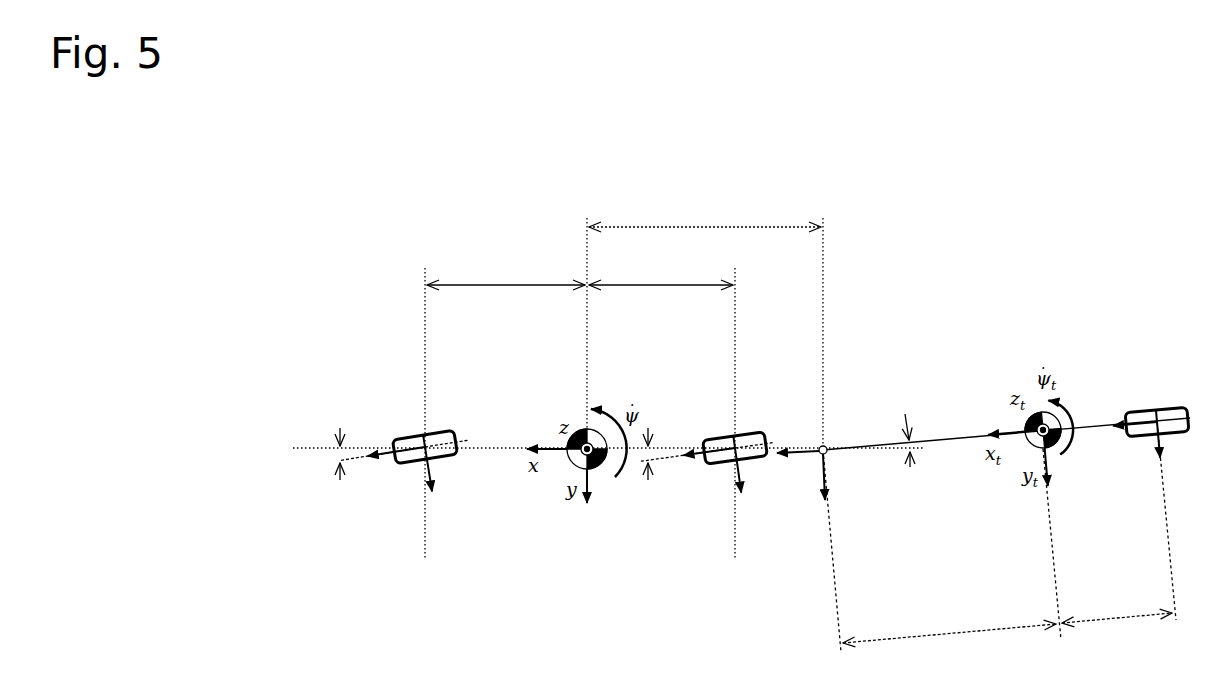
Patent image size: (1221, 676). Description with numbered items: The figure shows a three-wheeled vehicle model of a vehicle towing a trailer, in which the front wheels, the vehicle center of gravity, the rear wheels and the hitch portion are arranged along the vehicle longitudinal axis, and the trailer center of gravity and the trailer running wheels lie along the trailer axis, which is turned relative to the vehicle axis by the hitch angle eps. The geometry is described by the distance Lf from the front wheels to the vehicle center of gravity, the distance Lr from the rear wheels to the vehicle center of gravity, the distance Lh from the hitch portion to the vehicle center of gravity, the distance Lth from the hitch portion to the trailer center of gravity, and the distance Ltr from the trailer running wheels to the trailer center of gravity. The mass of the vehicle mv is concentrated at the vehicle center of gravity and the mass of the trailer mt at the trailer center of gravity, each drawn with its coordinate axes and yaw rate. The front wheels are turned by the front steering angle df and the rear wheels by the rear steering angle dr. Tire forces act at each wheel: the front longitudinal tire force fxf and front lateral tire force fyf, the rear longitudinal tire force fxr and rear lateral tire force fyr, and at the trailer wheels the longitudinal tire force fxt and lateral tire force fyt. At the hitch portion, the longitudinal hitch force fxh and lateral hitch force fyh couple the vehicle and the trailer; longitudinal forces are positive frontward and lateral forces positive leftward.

The front wheel to center of gravity distance Lf is at (506, 263).
The rear wheel to center of gravity distance Lr is at (661, 266).
The hitch portion to vehicle center of gravity distance Lh is at (705, 208).
The hitch portion to trailer center of gravity distance Lth is at (949, 618).
The trailer running wheel to trailer center of gravity distance Ltr is at (1117, 602).
The longitudinal tire force of the front wheels fxf is at (405, 459).
The lateral tire force of the front wheels fyf is at (440, 469).
The longitudinal tire force of the rear wheels fxr is at (707, 460).
The lateral tire force of the rear wheels fyr is at (750, 470).
The longitudinal hitch force fxh is at (802, 466).
The lateral hitch force fyh is at (840, 479).
The longitudinal tire force of the trailer running wheels fxt is at (1147, 436).
The lateral tire force of the trailer running wheels fyt is at (1170, 438).
The mass of the vehicle mv is at (578, 465).
The mass of the trailer mt is at (1026, 419).
The steering angle of the front wheels df is at (343, 466).
The steering angle of the rear wheels dr is at (651, 466).
The hitch angle eps is at (912, 455).